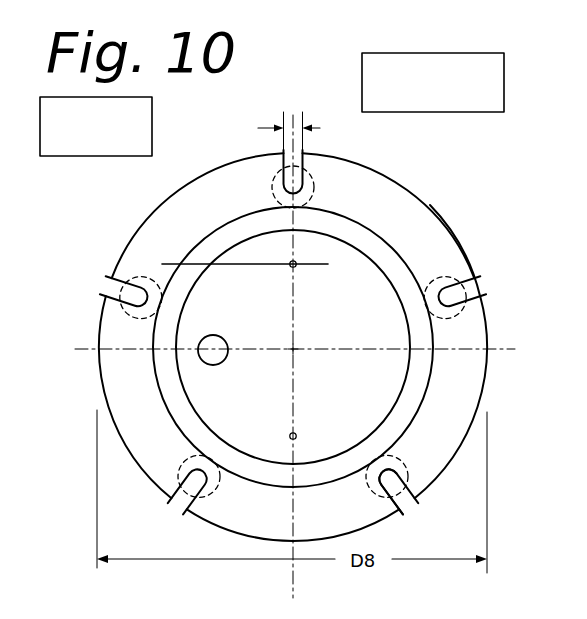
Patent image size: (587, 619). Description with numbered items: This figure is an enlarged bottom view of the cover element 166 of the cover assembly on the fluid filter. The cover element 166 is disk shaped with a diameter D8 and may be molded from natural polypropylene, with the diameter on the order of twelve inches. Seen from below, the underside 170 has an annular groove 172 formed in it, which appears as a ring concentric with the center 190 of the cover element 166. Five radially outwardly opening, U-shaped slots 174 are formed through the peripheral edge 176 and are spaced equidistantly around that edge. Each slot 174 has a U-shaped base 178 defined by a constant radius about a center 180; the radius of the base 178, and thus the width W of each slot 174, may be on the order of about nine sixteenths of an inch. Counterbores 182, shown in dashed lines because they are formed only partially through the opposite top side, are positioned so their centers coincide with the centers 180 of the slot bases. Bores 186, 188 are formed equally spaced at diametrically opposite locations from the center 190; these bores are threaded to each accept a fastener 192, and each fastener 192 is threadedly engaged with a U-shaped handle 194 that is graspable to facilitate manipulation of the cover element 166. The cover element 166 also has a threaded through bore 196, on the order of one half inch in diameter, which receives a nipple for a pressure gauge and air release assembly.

The cover element 166 is at (436, 200).
The underside 170 is at (462, 245).
The annular groove 172 is at (440, 262).
The U-shaped slots 174 is at (288, 162).
The peripheral edge 176 is at (477, 421).
The U-shaped base 178 is at (372, 495).
The center 180 is at (383, 490).
The counterbores 182 is at (274, 197).
The bore 186 is at (300, 268).
The bore 188 is at (297, 435).
The center 190 is at (292, 348).
The fastener 192 is at (328, 264).
The U-shaped handle 194 is at (162, 265).
The through bore 196 is at (202, 340).